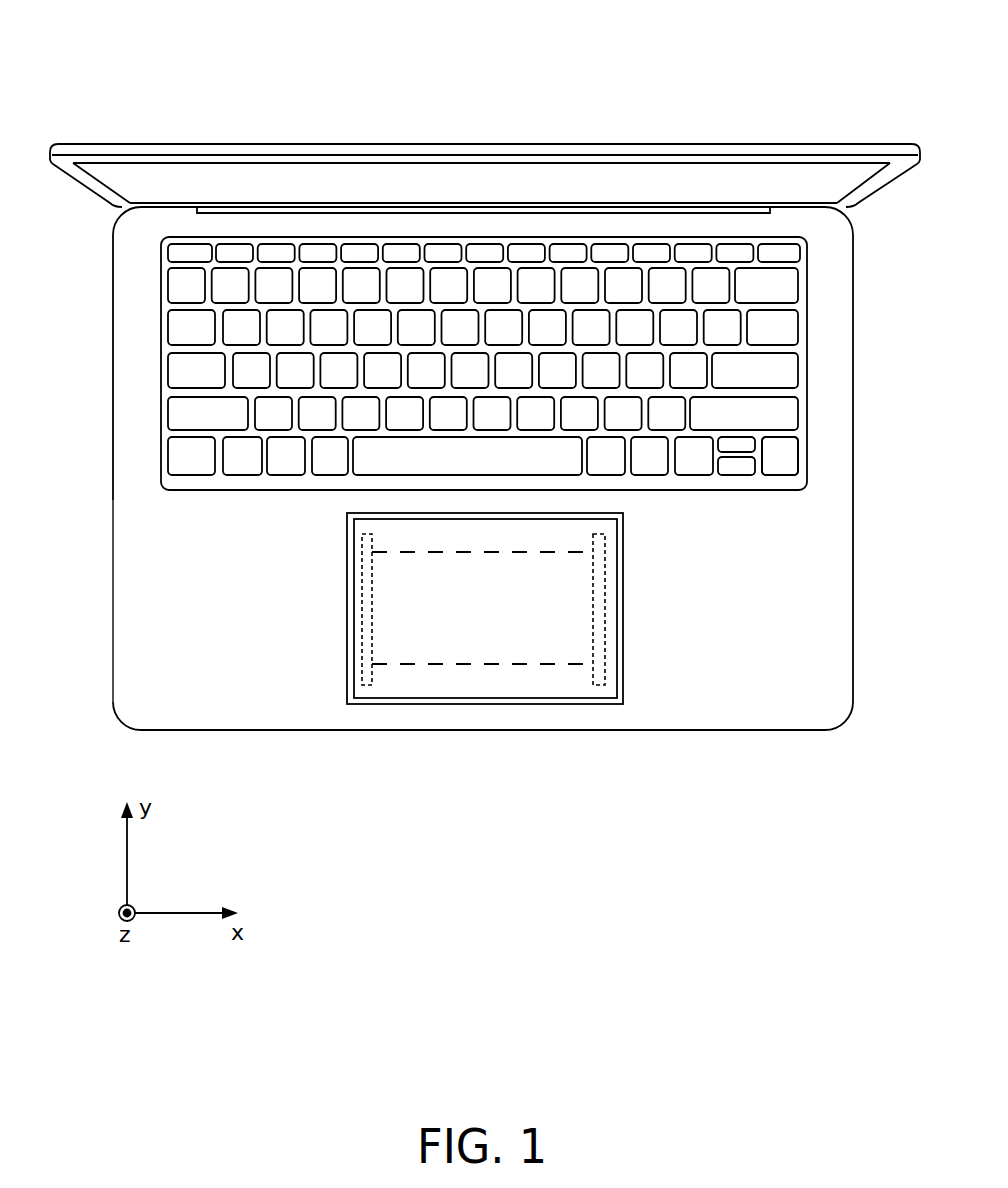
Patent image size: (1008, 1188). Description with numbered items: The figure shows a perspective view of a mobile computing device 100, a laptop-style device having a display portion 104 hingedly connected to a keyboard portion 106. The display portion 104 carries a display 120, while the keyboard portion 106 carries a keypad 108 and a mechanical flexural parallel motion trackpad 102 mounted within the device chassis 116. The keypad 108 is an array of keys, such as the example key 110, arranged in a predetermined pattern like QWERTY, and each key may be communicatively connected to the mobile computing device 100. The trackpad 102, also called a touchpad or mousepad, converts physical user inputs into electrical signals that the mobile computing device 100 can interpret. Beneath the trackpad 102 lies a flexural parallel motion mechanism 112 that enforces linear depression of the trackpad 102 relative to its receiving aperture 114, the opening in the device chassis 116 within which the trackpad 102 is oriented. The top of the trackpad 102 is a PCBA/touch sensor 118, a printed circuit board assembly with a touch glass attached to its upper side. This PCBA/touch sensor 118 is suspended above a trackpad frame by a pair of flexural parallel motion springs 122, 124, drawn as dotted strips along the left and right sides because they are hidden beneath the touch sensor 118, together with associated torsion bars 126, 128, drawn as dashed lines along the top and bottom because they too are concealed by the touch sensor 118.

The mobile computing device 100 is at (232, 80).
The mechanical flexural parallel motion trackpad 102 is at (320, 607).
The display portion 104 is at (72, 200).
The keyboard portion 106 is at (102, 438).
The keypad 108 is at (529, 383).
The key 110 is at (783, 463).
The flexural parallel motion mechanism 112 is at (397, 678).
The receiving aperture 114 is at (626, 548).
The device chassis 116 is at (186, 601).
The PCBA/touch sensor 118 is at (482, 598).
The display 120 is at (481, 180).
The flexural parallel motion spring 122 is at (370, 578).
The flexural parallel motion spring 124 is at (603, 633).
The torsion bar 126 is at (428, 552).
The torsion bar 128 is at (490, 664).